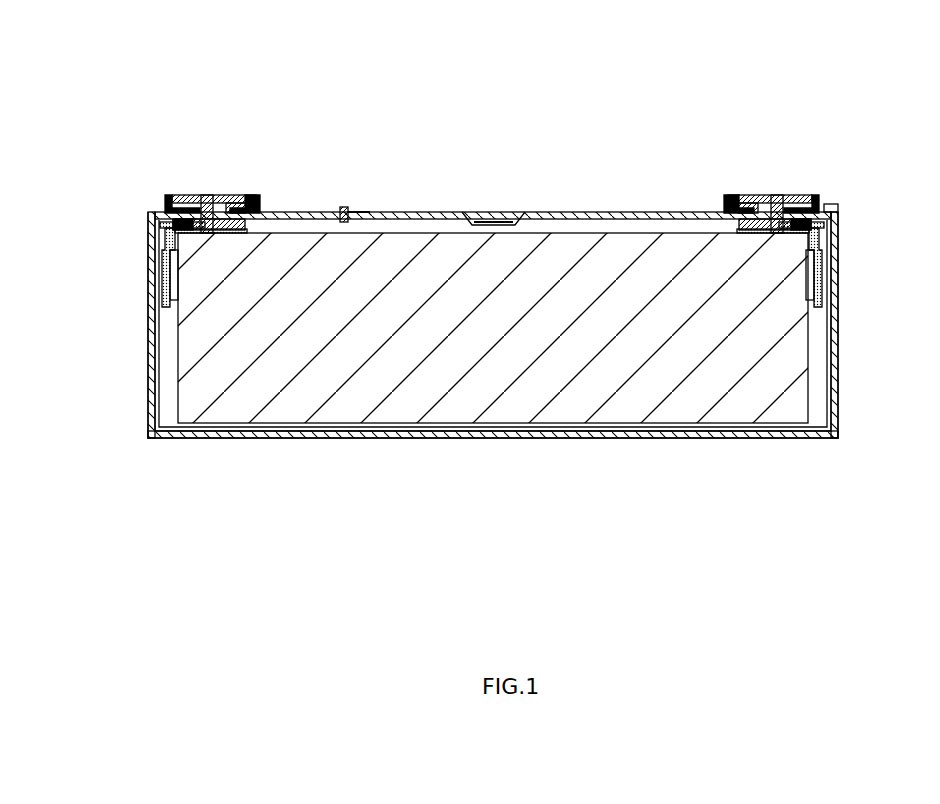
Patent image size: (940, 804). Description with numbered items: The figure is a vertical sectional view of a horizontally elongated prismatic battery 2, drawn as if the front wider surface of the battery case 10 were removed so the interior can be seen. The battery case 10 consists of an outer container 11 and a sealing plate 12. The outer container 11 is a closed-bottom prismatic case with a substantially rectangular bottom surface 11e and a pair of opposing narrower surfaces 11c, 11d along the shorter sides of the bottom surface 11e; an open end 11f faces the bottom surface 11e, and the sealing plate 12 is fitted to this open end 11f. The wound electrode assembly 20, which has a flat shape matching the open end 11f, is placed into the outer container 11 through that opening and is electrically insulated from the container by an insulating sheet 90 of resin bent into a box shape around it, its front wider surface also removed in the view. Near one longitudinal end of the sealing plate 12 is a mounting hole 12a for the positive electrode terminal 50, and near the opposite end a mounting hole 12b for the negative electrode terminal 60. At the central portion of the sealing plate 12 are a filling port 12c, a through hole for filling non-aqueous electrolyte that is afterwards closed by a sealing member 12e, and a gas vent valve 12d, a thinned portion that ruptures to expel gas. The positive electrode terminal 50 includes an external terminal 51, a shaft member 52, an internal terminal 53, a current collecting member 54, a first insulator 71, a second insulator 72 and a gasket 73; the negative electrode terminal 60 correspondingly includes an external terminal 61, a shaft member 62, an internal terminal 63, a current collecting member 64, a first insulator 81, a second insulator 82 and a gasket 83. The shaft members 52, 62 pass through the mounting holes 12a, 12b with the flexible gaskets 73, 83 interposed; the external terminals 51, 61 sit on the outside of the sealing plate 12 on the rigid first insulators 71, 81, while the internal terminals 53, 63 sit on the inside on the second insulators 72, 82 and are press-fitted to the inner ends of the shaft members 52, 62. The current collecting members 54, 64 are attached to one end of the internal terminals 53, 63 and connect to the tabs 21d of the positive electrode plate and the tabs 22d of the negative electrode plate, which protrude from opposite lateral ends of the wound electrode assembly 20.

The battery 2 is at (672, 98).
The battery case 10 is at (88, 192).
The outer container 11 is at (842, 404).
The narrower surface 11c is at (148, 376).
The narrower surface 11d is at (840, 370).
The bottom surface 11e is at (260, 440).
The open end 11f is at (836, 209).
The sealing plate 12 is at (597, 210).
The mounting hole 12a is at (207, 243).
The mounting hole 12b is at (773, 243).
The filling port 12c is at (356, 207).
The gas vent valve 12d is at (492, 212).
The sealing member 12e is at (344, 207).
The wound electrode assembly 20 is at (462, 402).
The tab 21d is at (173, 300).
The tab 22d is at (812, 300).
The positive electrode terminal 50 is at (200, 183).
The external terminal 51 is at (185, 195).
The shaft member 52 is at (208, 195).
The internal terminal 53 is at (165, 225).
The current collecting member 54 is at (165, 265).
The negative electrode terminal 60 is at (785, 183).
The external terminal 61 is at (800, 195).
The shaft member 62 is at (777, 195).
The internal terminal 63 is at (822, 226).
The current collecting member 64 is at (822, 265).
The first insulator 71 is at (165, 205).
The second insulator 72 is at (248, 222).
The gasket 73 is at (232, 200).
The first insulator 81 is at (820, 205).
The second insulator 82 is at (712, 215).
The gasket 83 is at (745, 200).
The insulating sheet 90 is at (156, 398).